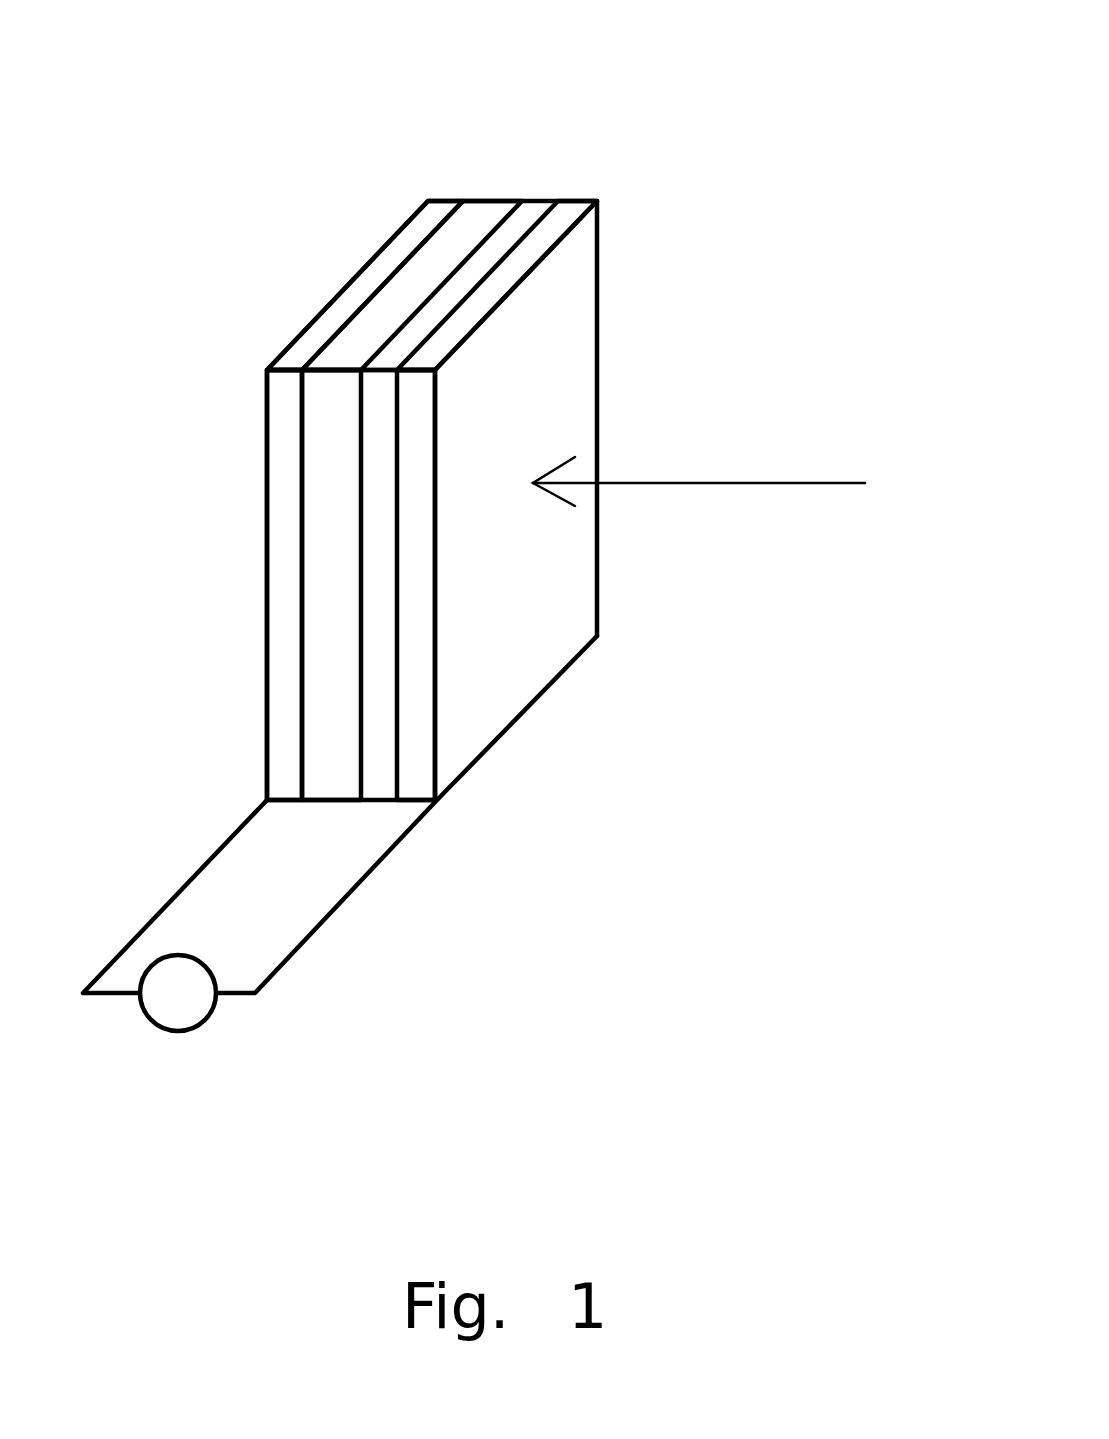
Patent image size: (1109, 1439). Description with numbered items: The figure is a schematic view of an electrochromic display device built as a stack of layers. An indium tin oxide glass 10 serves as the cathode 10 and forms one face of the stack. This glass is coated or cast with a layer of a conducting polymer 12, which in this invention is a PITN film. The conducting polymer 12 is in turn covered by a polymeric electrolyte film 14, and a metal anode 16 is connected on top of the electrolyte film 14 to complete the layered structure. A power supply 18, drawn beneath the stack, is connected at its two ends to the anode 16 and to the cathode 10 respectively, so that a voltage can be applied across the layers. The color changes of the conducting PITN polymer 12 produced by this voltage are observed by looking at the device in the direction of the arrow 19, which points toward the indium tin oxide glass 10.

The indium tin oxide glass 10 is at (493, 500).
The conducting polymer 12 is at (667, 500).
The polymeric electrolyte film 14 is at (596, 505).
The metal anode 16 is at (538, 586).
The power supply 18 is at (150, 1075).
The arrow 19 is at (728, 484).